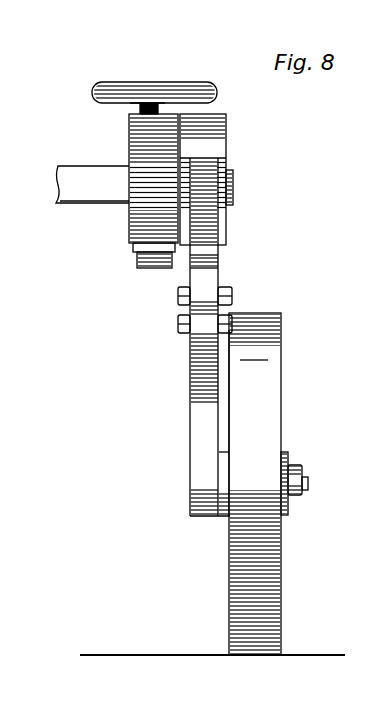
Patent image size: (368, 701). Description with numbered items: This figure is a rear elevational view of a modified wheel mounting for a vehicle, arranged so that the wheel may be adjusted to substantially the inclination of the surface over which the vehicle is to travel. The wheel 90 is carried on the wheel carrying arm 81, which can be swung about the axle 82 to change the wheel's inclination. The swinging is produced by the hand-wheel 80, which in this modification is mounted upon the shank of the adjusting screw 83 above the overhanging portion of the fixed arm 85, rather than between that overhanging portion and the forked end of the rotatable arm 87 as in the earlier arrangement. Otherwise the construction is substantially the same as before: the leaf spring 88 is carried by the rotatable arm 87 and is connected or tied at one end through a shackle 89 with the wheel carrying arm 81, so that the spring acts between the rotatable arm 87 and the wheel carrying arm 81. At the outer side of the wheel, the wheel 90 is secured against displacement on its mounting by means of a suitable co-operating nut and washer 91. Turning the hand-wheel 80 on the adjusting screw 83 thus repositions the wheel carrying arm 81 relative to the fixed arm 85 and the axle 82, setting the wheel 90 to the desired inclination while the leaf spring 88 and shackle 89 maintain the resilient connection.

The hand-wheel 80 is at (116, 82).
The wheel carrying arm 81 is at (200, 401).
The axle 82 is at (70, 190).
The adjusting screw 83 is at (138, 108).
The fixed arm 85 is at (128, 211).
The rotatable arm 87 is at (153, 260).
The leaf spring 88 is at (220, 222).
The shackle 89 is at (222, 327).
The wheel 90 is at (268, 388).
The nut and washer 91 is at (291, 495).